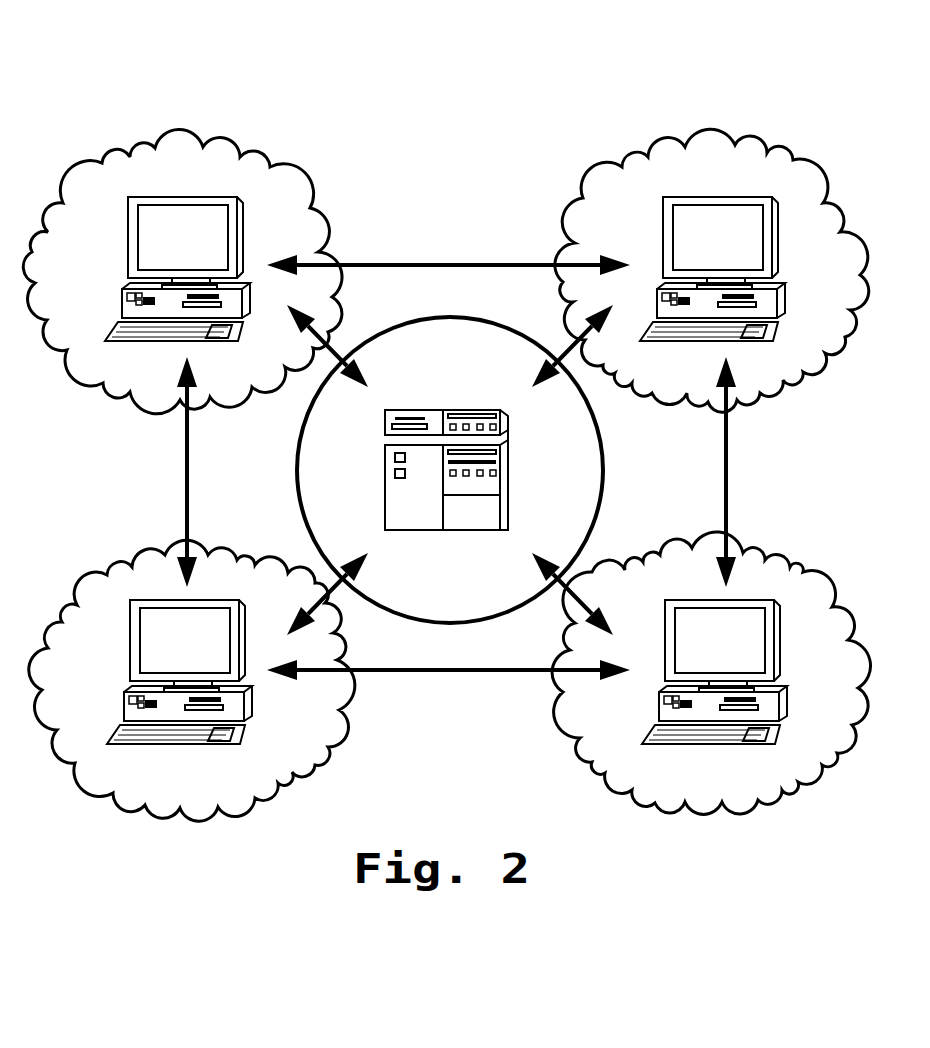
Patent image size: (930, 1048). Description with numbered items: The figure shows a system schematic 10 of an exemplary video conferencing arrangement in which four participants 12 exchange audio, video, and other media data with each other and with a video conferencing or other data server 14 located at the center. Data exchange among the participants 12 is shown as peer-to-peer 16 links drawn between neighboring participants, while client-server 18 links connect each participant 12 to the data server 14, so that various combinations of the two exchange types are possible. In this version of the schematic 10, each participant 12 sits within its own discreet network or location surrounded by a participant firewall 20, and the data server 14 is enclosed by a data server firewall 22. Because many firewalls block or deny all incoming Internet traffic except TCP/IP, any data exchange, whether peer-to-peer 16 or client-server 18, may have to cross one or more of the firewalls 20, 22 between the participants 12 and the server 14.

The system schematic 10 is at (239, 52).
The participants 12 is at (183, 197).
The data server 14 is at (437, 531).
The peer-to-peer data exchange 16 is at (450, 262).
The client-server data exchange 18 is at (327, 343).
The participant firewalls 20 is at (315, 212).
The data server firewall 22 is at (450, 624).